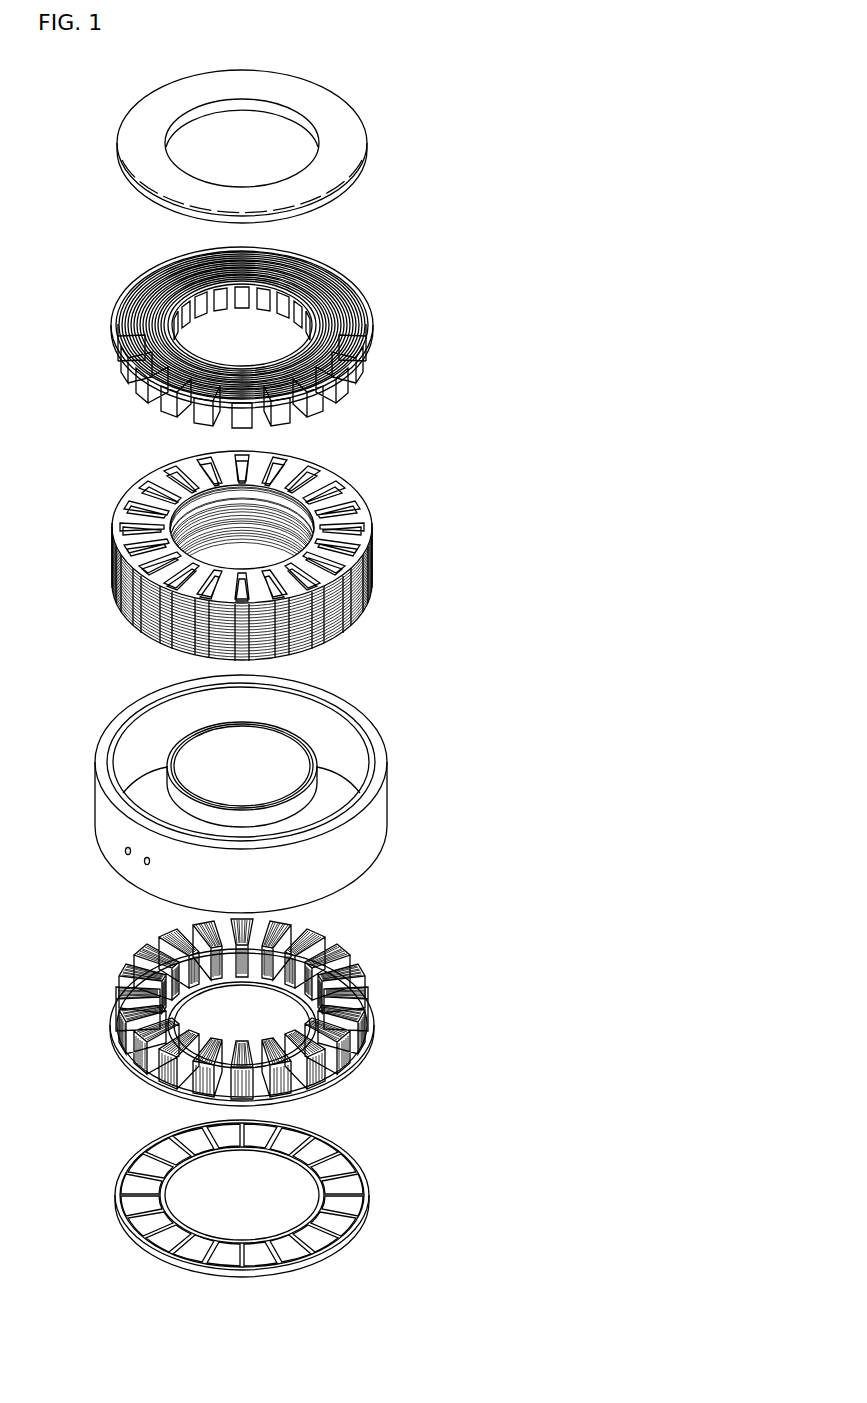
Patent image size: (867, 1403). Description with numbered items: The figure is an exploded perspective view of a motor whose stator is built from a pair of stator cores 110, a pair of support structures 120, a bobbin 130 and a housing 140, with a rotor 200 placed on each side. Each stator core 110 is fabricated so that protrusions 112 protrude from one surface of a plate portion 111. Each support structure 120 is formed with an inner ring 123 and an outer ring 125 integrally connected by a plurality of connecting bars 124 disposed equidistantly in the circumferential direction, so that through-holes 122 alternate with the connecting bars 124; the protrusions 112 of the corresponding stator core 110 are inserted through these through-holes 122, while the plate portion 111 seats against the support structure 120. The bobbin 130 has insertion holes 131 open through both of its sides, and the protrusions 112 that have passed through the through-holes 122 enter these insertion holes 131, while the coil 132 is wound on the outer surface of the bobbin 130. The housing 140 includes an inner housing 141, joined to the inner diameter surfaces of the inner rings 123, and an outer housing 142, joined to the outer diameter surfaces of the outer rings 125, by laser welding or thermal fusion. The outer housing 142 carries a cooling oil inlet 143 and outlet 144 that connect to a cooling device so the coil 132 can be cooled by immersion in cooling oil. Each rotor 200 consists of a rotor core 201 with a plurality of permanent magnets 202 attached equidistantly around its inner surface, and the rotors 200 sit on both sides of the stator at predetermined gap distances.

The stator core 110 is at (279, 684).
The plate portion 111 is at (357, 330).
The protrusion 112 is at (330, 406).
The stator core-fixing support structure 120 is at (269, 663).
The through-hole 122 is at (205, 340).
The inner ring 123 is at (287, 294).
The connecting bar 124 is at (200, 1081).
The outer ring 125 is at (345, 273).
The bobbin 130 is at (293, 556).
The insertion hole 131 is at (356, 541).
The coil 132 is at (370, 573).
The housing 140 is at (293, 795).
The inner housing 141 is at (307, 744).
The outer housing 142 is at (388, 797).
The inlet 143 is at (124, 853).
The outlet 144 is at (143, 864).
The rotor 200 is at (259, 672).
The rotor core 201 is at (346, 122).
The permanent magnet 202 is at (362, 188).